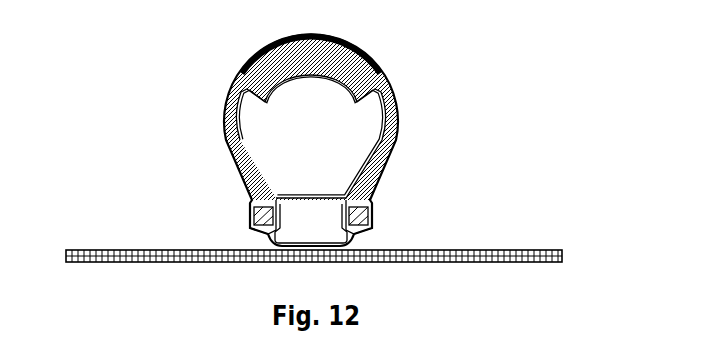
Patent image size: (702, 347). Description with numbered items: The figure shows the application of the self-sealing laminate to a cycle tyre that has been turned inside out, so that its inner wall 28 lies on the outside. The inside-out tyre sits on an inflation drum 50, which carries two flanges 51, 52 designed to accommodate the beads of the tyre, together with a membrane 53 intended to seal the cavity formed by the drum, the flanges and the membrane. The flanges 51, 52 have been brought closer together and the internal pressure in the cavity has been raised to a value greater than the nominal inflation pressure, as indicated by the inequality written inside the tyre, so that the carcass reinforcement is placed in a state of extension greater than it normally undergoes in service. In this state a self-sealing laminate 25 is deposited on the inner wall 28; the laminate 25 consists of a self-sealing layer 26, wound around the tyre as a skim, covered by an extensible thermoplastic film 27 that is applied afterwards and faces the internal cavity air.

The self-sealing laminate 25 is at (292, 136).
The self-sealing layer 26 is at (373, 63).
The extensible thermoplastic film 27 is at (302, 33).
The inner wall 28 is at (232, 97).
The membrane 53 is at (382, 143).
The inflation drum 50 is at (168, 258).
The flange 51 is at (247, 213).
The flange 52 is at (373, 218).